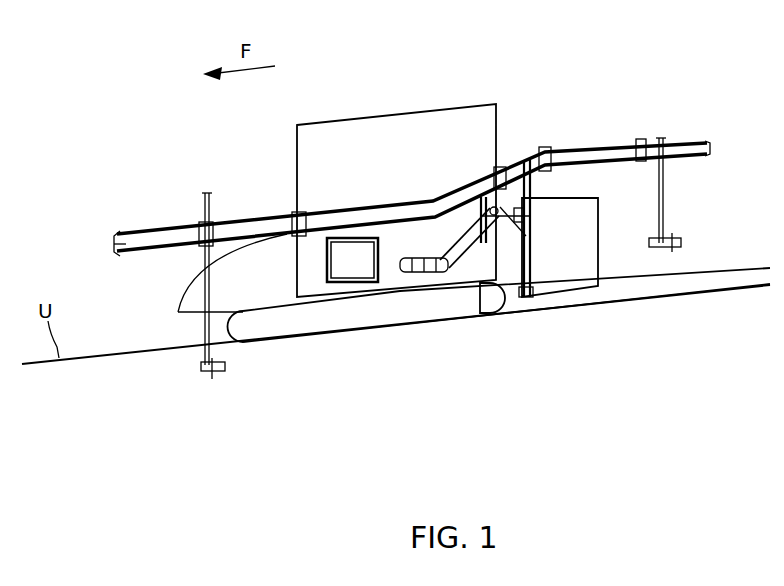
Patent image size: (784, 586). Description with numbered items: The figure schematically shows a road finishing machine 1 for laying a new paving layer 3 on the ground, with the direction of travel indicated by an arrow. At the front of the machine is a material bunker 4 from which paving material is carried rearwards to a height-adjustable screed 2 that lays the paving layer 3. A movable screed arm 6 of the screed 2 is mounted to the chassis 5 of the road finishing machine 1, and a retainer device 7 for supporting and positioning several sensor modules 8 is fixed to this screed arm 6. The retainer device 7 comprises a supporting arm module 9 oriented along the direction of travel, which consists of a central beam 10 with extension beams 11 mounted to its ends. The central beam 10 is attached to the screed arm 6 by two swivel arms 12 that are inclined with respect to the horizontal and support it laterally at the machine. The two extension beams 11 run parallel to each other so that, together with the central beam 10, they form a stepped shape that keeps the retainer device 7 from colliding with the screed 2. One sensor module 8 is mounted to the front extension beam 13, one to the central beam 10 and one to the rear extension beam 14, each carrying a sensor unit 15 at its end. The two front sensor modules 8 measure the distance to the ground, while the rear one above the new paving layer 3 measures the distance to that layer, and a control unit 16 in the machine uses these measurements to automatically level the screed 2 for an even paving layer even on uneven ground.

The road finishing machine 1 is at (472, 92).
The screed 2 is at (571, 252).
The paving layer 3 is at (752, 268).
The material bunker 4 is at (263, 281).
The chassis 5 is at (416, 250).
The screed arm 6 is at (460, 236).
The retainer device 7 is at (484, 272).
The sensor module 8 is at (194, 323).
The supporting arm module 9 is at (343, 198).
The central beam 10 is at (515, 163).
The extension beam 11 is at (386, 208).
The swivel arm 12 is at (541, 185).
The front extension beam 13 is at (151, 233).
The rear extension beam 14 is at (703, 142).
The sensor unit 15 is at (226, 373).
The control unit 16 is at (352, 260).